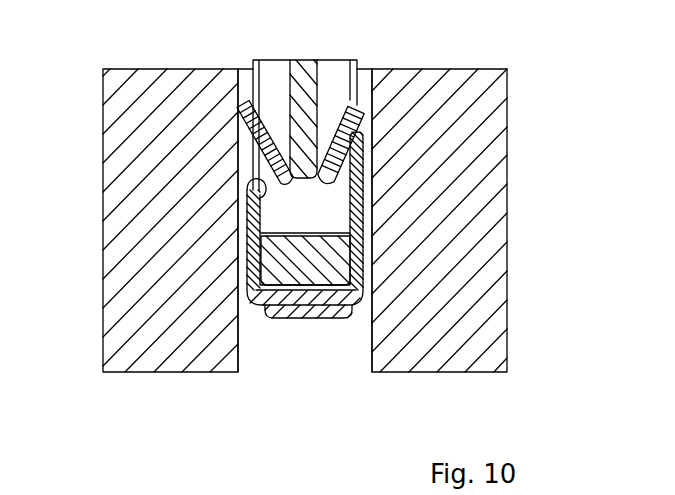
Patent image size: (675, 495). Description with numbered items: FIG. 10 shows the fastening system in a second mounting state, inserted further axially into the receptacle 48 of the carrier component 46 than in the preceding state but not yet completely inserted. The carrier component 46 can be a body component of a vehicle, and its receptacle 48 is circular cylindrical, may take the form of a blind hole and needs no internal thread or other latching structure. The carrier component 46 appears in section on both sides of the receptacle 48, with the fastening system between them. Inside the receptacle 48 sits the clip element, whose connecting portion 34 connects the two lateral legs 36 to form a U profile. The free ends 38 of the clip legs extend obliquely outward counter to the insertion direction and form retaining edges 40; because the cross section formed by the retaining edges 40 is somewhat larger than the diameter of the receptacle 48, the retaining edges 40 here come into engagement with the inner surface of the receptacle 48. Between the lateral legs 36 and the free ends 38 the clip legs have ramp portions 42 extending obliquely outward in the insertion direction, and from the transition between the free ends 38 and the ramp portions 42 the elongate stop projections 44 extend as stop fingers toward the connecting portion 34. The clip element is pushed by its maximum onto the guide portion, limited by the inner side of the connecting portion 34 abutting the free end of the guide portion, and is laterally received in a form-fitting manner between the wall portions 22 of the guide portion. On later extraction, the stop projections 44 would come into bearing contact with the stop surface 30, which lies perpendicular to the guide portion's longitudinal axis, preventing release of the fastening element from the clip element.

The wall portions 22 is at (290, 310).
The stop surface 30 is at (320, 232).
The connecting portion 34 is at (318, 290).
The lateral legs 36 is at (363, 258).
The free ends 38 is at (262, 145).
The retaining edges 40 is at (237, 100).
The ramp portions 42 is at (275, 195).
The stop projections 44 is at (320, 156).
The carrier component 46 is at (103, 258).
The receptacle 48 is at (238, 338).